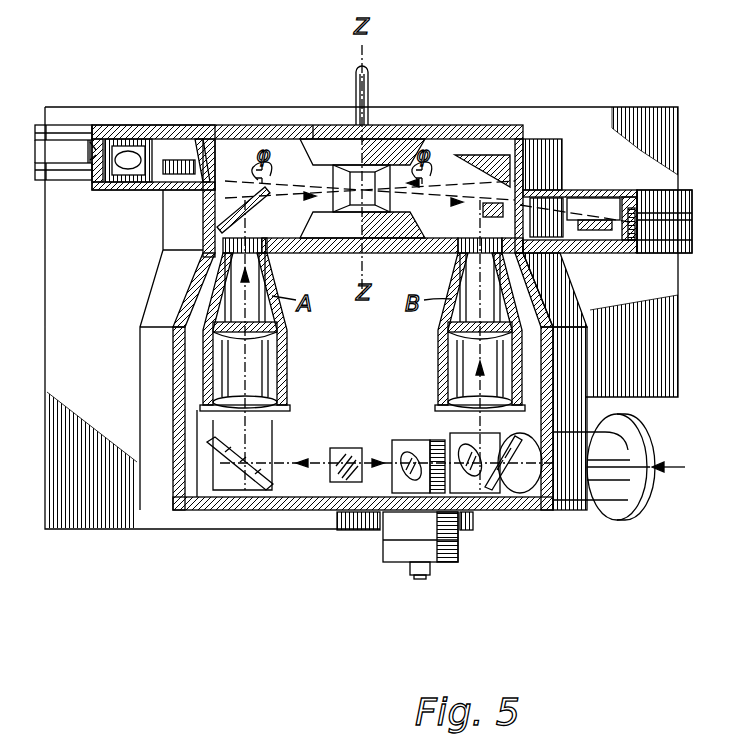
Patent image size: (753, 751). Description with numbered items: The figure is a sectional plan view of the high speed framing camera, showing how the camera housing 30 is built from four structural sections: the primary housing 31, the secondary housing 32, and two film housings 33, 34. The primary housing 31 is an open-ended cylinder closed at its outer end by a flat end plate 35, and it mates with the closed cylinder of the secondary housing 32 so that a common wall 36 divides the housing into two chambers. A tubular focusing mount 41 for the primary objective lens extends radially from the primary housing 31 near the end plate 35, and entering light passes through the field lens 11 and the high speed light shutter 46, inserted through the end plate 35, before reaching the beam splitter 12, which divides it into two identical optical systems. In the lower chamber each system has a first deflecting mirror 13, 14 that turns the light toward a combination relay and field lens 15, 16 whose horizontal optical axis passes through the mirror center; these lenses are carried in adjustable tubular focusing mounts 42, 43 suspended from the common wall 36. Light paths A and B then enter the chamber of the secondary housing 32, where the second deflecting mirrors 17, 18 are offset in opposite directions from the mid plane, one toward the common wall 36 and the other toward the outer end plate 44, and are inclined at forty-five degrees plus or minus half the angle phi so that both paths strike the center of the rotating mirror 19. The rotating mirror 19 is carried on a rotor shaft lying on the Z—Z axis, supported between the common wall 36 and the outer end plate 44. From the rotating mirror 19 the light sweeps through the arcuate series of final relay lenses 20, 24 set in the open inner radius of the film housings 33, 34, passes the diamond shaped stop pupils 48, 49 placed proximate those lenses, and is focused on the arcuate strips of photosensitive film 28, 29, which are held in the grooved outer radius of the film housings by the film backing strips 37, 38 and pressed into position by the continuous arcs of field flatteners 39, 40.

The field lens 11 is at (456, 442).
The beam splitter 12 is at (352, 450).
The first deflecting mirror 13 is at (252, 478).
The first deflecting mirror 14 is at (491, 490).
The combination relay and field lens 15 is at (262, 336).
The combination relay and field lens 16 is at (452, 336).
The second deflecting mirror 17 is at (242, 214).
The second deflecting mirror 18 is at (486, 168).
The rotating mirror 19 is at (378, 204).
The final relay lenses 20 is at (217, 148).
The final relay lenses 24 is at (486, 213).
The photosensitive film 28 is at (90, 145).
The photosensitive film 29 is at (640, 250).
The camera housing 30 is at (258, 518).
The primary housing 31 is at (168, 441).
The secondary housing 32 is at (419, 122).
The film housing 33 is at (147, 122).
The film housing 34 is at (694, 224).
The end plate 35 is at (360, 520).
The common wall 36 is at (432, 252).
The film backing strip 37 is at (92, 170).
The film backing strip 38 is at (640, 215).
The field flatteners 39 is at (113, 178).
The field flatteners 40 is at (594, 235).
The tubular focusing mount 41 is at (622, 447).
The adjustable tubular focusing mount 42 is at (288, 381).
The adjustable tubular focusing mount 43 is at (437, 382).
The outer end plate 44 is at (313, 124).
The high speed light shutter 46 is at (392, 558).
The diamond shaped stop pupils 48 is at (170, 182).
The diamond shaped stop pupils 49 is at (560, 200).